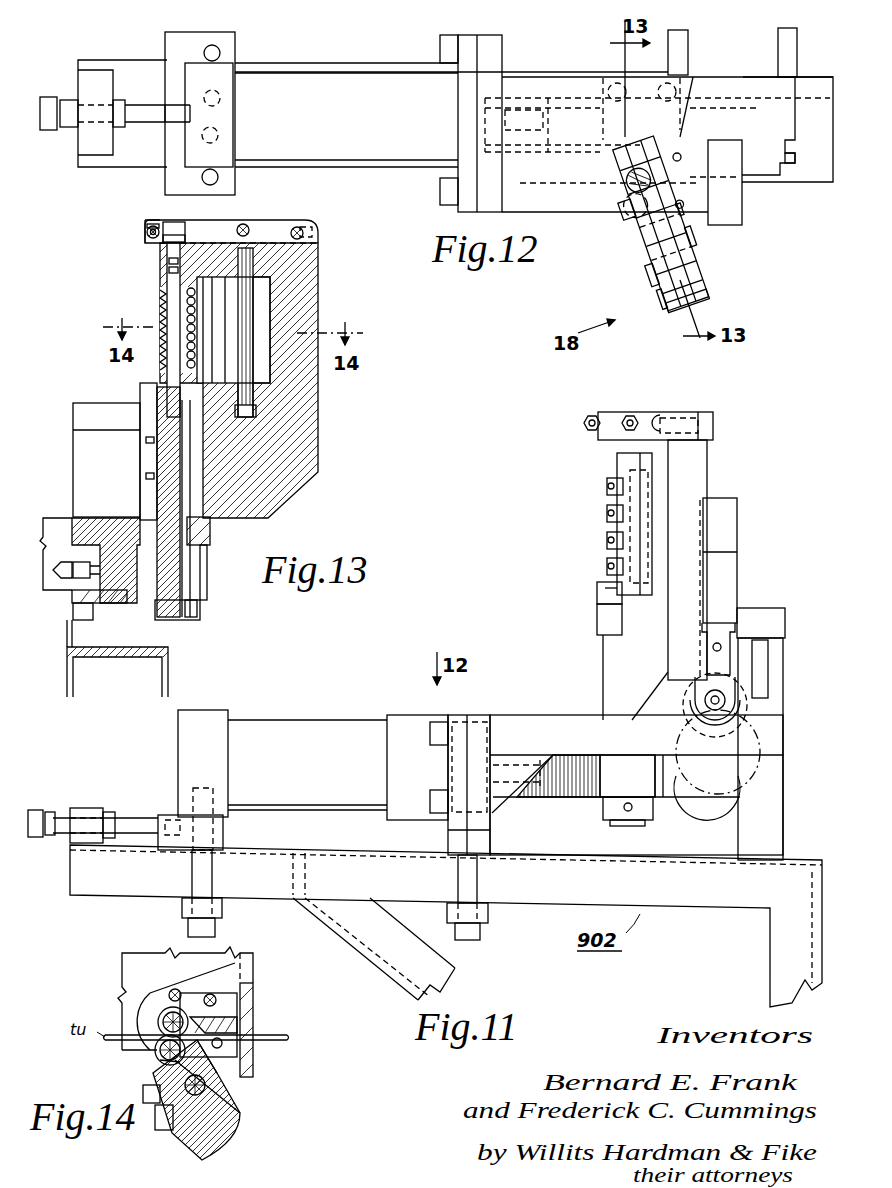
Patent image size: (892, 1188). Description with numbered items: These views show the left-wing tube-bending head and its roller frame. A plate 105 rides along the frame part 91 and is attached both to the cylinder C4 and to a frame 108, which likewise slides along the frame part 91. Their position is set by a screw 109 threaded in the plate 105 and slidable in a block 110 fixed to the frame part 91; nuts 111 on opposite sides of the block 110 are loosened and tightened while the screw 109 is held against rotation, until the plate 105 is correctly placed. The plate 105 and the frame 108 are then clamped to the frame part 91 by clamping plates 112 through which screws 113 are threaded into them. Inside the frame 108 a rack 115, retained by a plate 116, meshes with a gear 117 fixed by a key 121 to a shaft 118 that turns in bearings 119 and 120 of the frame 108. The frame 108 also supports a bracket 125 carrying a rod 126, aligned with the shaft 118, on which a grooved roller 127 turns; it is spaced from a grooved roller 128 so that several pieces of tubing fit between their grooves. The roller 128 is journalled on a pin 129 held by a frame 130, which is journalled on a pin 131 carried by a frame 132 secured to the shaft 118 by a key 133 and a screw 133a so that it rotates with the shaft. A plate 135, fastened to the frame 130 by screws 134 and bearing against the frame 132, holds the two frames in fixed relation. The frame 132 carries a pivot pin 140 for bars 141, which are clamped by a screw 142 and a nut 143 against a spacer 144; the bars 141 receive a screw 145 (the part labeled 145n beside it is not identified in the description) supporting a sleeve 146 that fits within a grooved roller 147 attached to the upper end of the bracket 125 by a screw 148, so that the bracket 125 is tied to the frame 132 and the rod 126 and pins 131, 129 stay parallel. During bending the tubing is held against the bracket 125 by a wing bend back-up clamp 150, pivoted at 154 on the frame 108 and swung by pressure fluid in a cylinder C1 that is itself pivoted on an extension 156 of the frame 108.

In FIG. 13, the frame part 91 is at (118, 658).
In FIG. 11, the frame part 91 is at (70, 877).
In FIG. 11, the plate 105 is at (224, 829).
In FIG. 12, the frame 108 is at (573, 76).
In FIG. 13, the frame 108 is at (73, 443).
In FIG. 11, the frame 108 is at (490, 720).
In FIG. 14, the frame 108 is at (237, 977).
In FIG. 12, the screw 109 is at (146, 106).
In FIG. 11, the screw 109 is at (133, 817).
In FIG. 12, the block 110 is at (95, 68).
In FIG. 11, the block 110 is at (86, 807).
In FIG. 12, the nuts 111 is at (68, 99).
In FIG. 11, the nuts 111 is at (62, 812).
In FIG. 11, the clamping plates 112 is at (182, 911).
In FIG. 11, the screws 113 is at (215, 930).
In FIG. 13, the rack 115 is at (117, 540).
In FIG. 11, the rack 115 is at (548, 797).
In FIG. 13, the plate 116 is at (120, 604).
In FIG. 13, the gear 117 is at (208, 588).
In FIG. 11, the gear 117 is at (597, 795).
In FIG. 13, the shaft 118 is at (172, 620).
In FIG. 11, the shaft 118 is at (622, 828).
In FIG. 13, the bearing 119 is at (148, 440).
In FIG. 13, the bearing 120 is at (205, 532).
In FIG. 13, the key 121 is at (190, 625).
In FIG. 13, the bracket 125 is at (164, 268).
In FIG. 11, the bracket 125 is at (597, 600).
In FIG. 14, the bracket 125 is at (232, 1003).
In FIG. 13, the rod 126 is at (164, 294).
In FIG. 14, the rod 126 is at (163, 1011).
In FIG. 13, the grooved roller 127 is at (160, 313).
In FIG. 14, the grooved roller 127 is at (160, 1020).
In FIG. 13, the grooved roller 128 is at (275, 311).
In FIG. 14, the grooved roller 128 is at (155, 1050).
In FIG. 13, the pin 129 is at (212, 280).
In FIG. 14, the pin 129 is at (160, 1062).
In FIG. 13, the frame 130 is at (255, 288).
In FIG. 14, the frame 130 is at (205, 1070).
In FIG. 13, the pin 131 is at (254, 408).
In FIG. 14, the pin 131 is at (206, 1086).
In FIG. 12, the frame 132 is at (633, 232).
In FIG. 13, the frame 132 is at (319, 249).
In FIG. 11, the frame 132 is at (603, 688).
In FIG. 14, the frame 132 is at (238, 1130).
In FIG. 13, the key 133 is at (183, 484).
In FIG. 13, the screw 133a is at (145, 476).
In FIG. 11, the screws 134 is at (607, 488).
In FIG. 14, the screws 134 is at (150, 1090).
In FIG. 11, the plate 135 is at (605, 588).
In FIG. 14, the plate 135 is at (172, 1120).
In FIG. 12, the pivot pin 140 is at (712, 292).
In FIG. 13, the pivot pin 140 is at (312, 230).
In FIG. 11, the pivot pin 140 is at (714, 432).
In FIG. 12, the bars 141 is at (706, 278).
In FIG. 13, the bars 141 is at (125, 236).
In FIG. 11, the bars 141 is at (665, 416).
In FIG. 12, the screw 142 is at (700, 250).
In FIG. 13, the screw 142 is at (250, 225).
In FIG. 11, the screw 142 is at (623, 432).
In FIG. 12, the nut 143 is at (632, 270).
In FIG. 11, the nut 143 is at (634, 412).
In FIG. 12, the spacer 144 is at (645, 282).
In FIG. 13, the spacer 144 is at (297, 227).
In FIG. 12, the screw 145 is at (682, 157).
In FIG. 13, the screw 145 is at (147, 233).
In FIG. 11, the screw 145 is at (584, 424).
In FIG. 12, the nut 145n is at (595, 164).
In FIG. 13, the sleeve 146 is at (143, 228).
In FIG. 13, the grooved roller 147 is at (158, 227).
In FIG. 13, the screw 148 is at (163, 250).
In FIG. 12, the wing bend back-up clamp 150 is at (742, 213).
In FIG. 11, the wing bend back-up clamp 150 is at (737, 536).
In FIG. 12, the pivot 154 is at (796, 157).
In FIG. 12, the extension 156 is at (797, 38).
In FIG. 11, the cylinder C1 is at (757, 747).
In FIG. 12, the cylinder C4 is at (332, 64).
In FIG. 11, the cylinder C4 is at (348, 719).